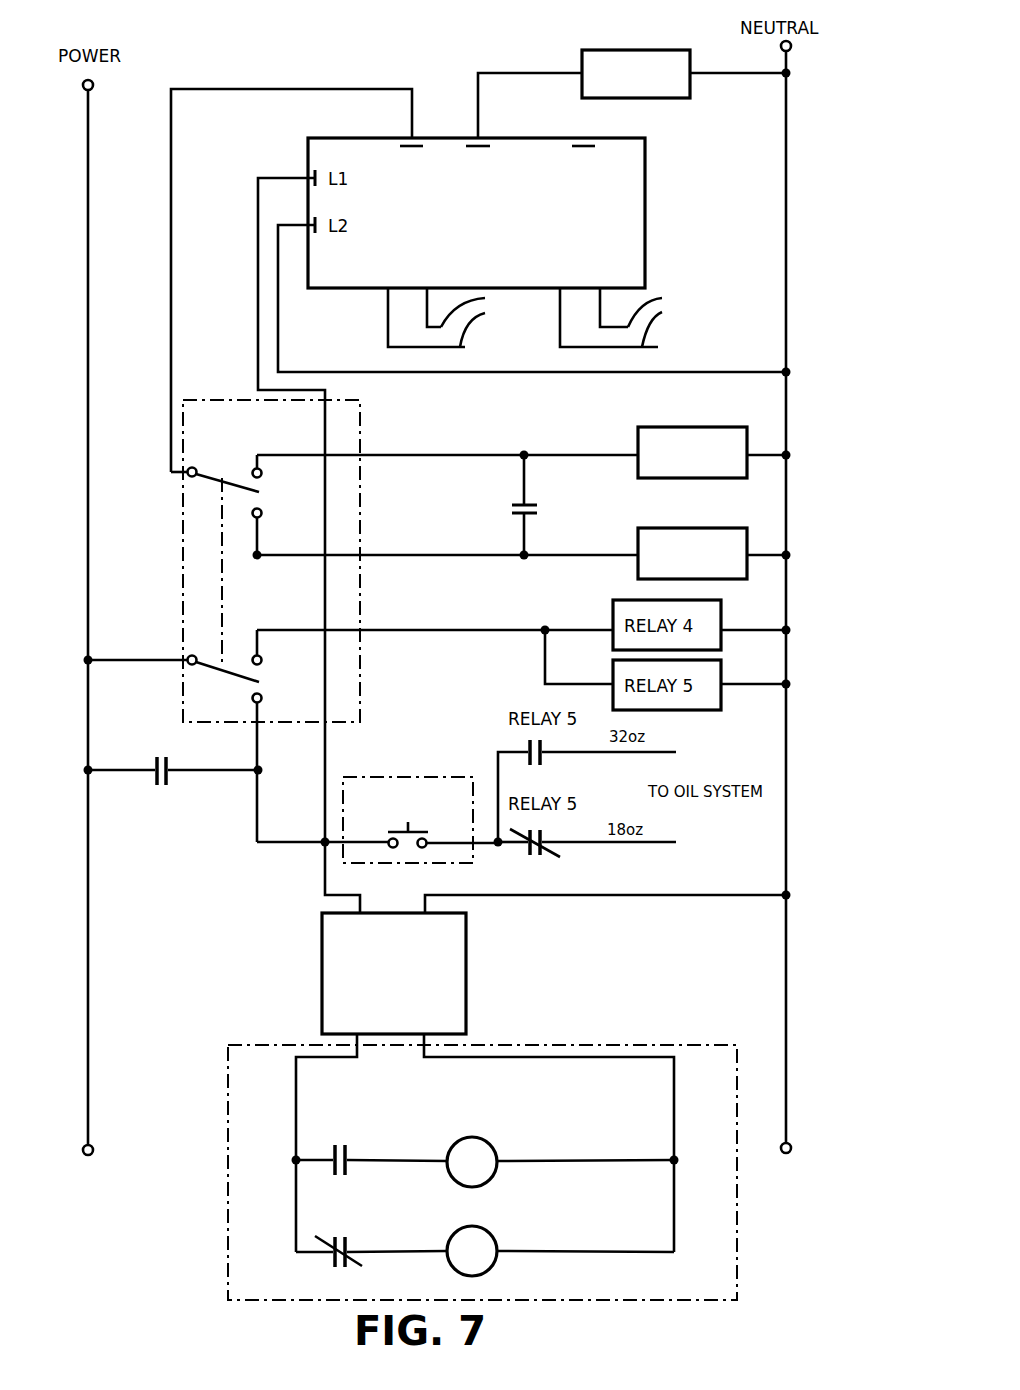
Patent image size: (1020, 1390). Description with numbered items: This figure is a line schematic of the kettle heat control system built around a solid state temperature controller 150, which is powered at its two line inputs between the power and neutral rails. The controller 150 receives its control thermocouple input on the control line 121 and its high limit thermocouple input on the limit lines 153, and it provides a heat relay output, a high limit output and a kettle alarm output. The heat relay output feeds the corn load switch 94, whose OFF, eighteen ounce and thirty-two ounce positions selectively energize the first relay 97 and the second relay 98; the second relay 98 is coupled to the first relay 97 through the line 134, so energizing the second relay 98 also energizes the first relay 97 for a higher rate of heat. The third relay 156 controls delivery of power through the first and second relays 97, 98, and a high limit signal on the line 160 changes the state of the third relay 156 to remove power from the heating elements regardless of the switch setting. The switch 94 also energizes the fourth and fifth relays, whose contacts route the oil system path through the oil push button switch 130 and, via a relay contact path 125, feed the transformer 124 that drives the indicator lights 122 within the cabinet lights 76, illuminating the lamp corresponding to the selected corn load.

The cabinet lights 76 is at (482, 1154).
The corn load switch 94 is at (360, 425).
The Relay 1 97 is at (700, 528).
The Relay 2 98 is at (690, 427).
The control line 121 is at (635, 317).
The indicator lights 122 is at (502, 1132).
The transformer 124 is at (467, 962).
The path 125 is at (178, 772).
The oil push button switch 130 is at (395, 777).
The line 134 is at (512, 548).
The temperature controller 150 is at (645, 200).
The limit lines 153 is at (462, 317).
The Relay 3 156 is at (630, 50).
The high limit signal line 160 is at (490, 73).